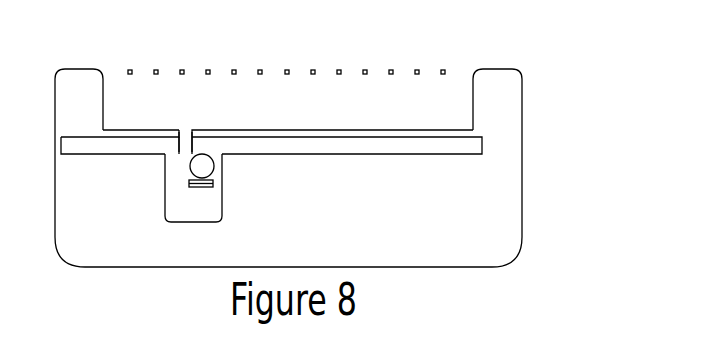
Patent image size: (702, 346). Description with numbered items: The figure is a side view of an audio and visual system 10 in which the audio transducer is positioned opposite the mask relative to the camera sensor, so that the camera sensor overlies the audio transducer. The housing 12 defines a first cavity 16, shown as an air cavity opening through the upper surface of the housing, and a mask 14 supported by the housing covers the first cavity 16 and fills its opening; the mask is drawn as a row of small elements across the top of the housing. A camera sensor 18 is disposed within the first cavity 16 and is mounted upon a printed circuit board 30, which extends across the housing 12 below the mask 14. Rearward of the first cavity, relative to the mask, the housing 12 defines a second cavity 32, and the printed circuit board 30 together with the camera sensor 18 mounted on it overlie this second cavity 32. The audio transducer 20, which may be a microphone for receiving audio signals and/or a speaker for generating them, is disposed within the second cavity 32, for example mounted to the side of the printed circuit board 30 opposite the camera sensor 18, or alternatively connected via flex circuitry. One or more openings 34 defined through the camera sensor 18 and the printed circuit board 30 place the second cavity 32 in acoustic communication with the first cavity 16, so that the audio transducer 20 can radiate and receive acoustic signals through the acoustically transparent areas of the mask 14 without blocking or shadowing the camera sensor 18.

The audio and visual system 10 is at (332, 137).
The housing 12 is at (510, 88).
The mask 14 is at (363, 65).
The first cavity 16 is at (437, 108).
The camera sensor 18 is at (352, 132).
The audio transducer 20 is at (203, 164).
The printed circuit board 30 is at (271, 176).
The second cavity 32 is at (203, 207).
The openings 34 is at (183, 133).